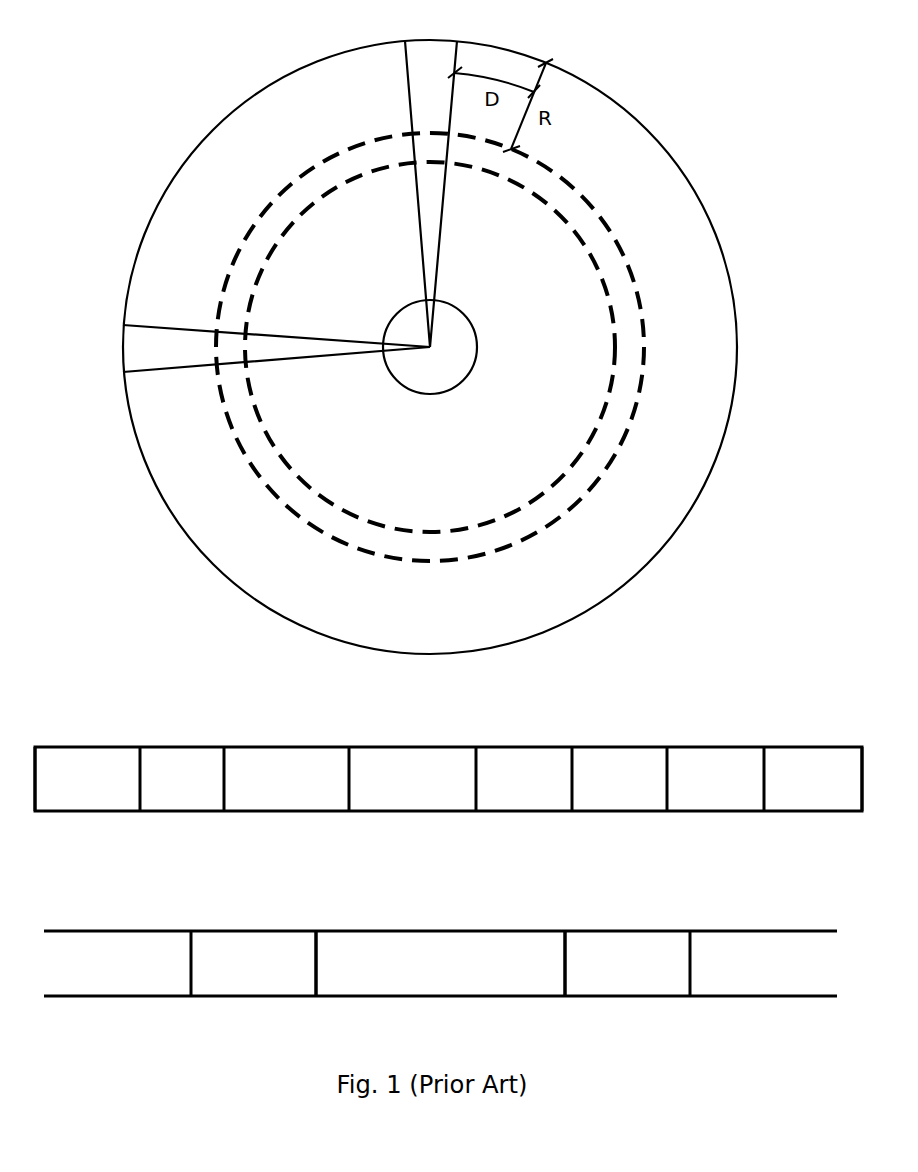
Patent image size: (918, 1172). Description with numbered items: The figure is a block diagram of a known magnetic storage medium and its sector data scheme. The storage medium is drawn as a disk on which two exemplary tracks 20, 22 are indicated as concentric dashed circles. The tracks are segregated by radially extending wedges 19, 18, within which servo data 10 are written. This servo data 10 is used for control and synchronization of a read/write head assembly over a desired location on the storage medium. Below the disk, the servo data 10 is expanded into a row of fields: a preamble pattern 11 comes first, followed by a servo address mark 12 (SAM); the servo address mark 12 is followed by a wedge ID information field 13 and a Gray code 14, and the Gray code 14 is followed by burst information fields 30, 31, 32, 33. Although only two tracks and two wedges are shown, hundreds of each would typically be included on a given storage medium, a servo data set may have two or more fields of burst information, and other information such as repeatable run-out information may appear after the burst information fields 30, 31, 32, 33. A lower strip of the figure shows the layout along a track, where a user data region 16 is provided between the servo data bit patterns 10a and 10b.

The servo data 10 is at (531, 722).
The servo data bit pattern 10a is at (237, 988).
The servo data bit pattern 10b is at (611, 988).
The preamble pattern 11 is at (77, 805).
The servo address mark 12 is at (172, 805).
The wedge ID information field 13 is at (276, 805).
The Gray code 14 is at (402, 805).
The user data region 16 is at (430, 988).
The wedge 18 is at (432, 44).
The wedge 19 is at (128, 348).
The track 20 is at (580, 237).
The track 22 is at (571, 181).
The burst information field 30 is at (514, 805).
The burst information field 31 is at (609, 805).
The burst information field 32 is at (705, 805).
The burst information field 33 is at (803, 805).